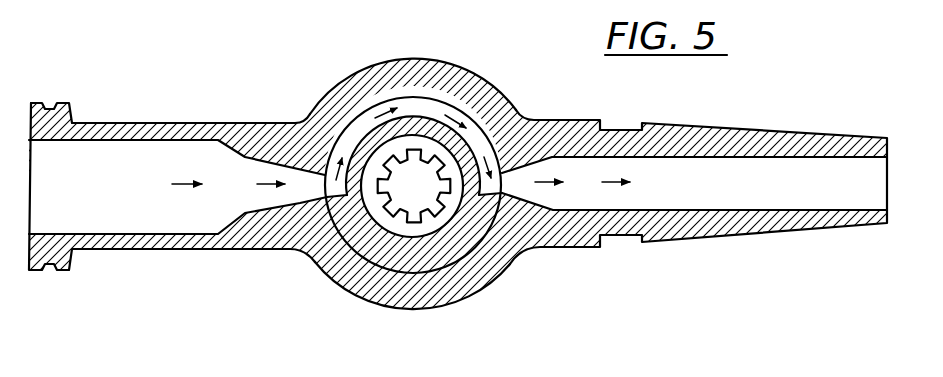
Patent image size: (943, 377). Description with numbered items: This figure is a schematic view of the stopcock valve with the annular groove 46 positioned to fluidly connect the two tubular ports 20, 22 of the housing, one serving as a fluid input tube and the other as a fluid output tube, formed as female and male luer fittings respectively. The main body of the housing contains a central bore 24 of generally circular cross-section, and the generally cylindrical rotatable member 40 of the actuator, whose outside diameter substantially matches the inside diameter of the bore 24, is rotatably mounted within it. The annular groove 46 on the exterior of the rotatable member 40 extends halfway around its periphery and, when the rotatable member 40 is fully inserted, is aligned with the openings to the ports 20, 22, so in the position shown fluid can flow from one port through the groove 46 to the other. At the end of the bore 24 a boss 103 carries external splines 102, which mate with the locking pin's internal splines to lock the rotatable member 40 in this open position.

The tubular port 20 is at (125, 122).
The tubular port 22 is at (727, 138).
The central bore 24 is at (397, 267).
The rotatable member 40 is at (448, 252).
The annular groove 46 is at (480, 137).
The external splines 102 is at (410, 177).
The boss 103 is at (413, 177).